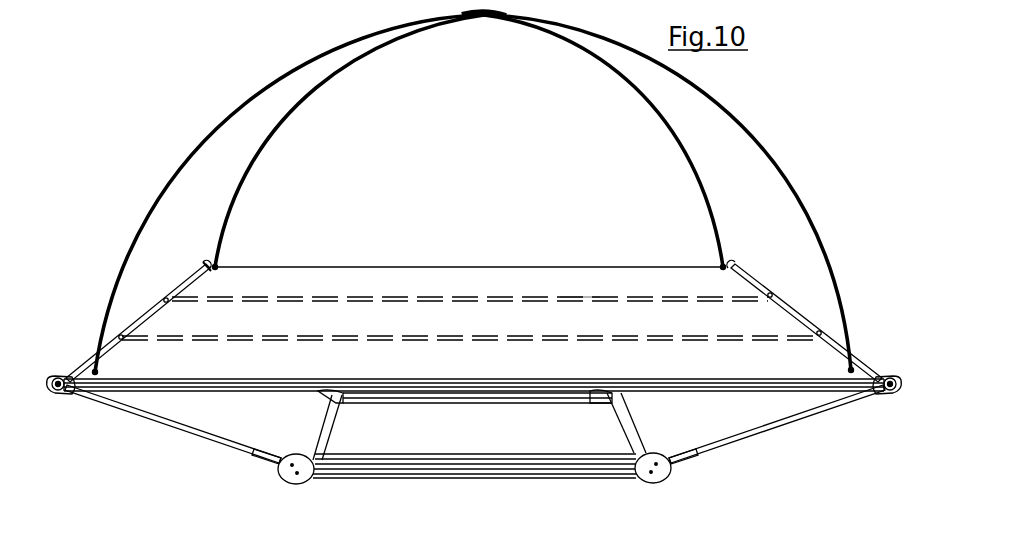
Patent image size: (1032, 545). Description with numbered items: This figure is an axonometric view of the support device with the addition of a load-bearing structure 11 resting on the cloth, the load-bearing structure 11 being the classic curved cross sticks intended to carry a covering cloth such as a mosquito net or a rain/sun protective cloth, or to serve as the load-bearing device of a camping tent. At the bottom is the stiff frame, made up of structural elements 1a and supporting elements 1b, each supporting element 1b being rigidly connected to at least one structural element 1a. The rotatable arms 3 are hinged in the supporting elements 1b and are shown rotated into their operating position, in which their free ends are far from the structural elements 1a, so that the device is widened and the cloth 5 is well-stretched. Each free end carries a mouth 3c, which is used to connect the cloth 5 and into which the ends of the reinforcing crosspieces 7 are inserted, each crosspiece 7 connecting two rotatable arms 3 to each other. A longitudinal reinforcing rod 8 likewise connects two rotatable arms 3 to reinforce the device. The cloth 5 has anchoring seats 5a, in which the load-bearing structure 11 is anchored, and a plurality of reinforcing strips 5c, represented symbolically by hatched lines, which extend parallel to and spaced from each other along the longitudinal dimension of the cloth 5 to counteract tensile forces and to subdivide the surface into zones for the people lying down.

The load-bearing structure 11 is at (219, 243).
The reinforcing crosspiece 7 is at (148, 302).
The cloth 5 is at (476, 325).
The anchoring seat 5a is at (218, 266).
The reinforcing strip 5c is at (575, 293).
The mouth 3c is at (59, 374).
The longitudinal reinforcing rod 8 is at (143, 392).
The rotatable arm 3 is at (176, 432).
The structural element 1a is at (316, 436).
The supporting element 1b is at (283, 477).